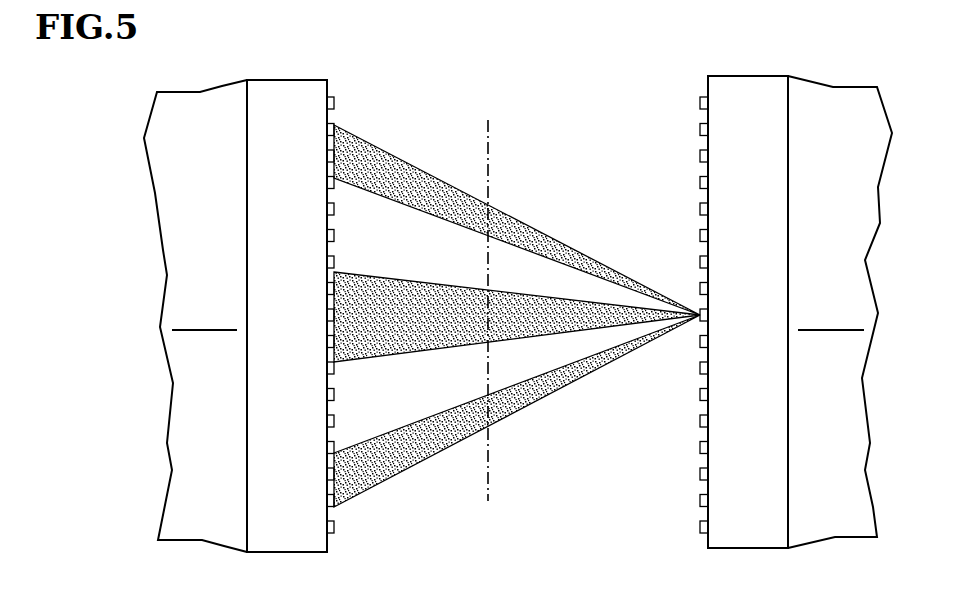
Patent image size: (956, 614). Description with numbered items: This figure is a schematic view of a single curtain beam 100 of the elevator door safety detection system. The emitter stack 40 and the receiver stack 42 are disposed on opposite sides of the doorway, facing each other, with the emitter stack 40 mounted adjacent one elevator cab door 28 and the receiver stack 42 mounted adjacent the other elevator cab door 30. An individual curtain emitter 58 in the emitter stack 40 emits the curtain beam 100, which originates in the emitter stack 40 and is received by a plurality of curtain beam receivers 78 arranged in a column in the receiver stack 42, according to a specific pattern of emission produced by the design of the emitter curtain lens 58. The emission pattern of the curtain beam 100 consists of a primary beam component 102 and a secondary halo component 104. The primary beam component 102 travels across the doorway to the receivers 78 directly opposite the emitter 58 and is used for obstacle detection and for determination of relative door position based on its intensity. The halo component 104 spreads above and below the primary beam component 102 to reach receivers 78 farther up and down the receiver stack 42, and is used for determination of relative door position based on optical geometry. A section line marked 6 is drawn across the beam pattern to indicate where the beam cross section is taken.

The elevator cab door 28 is at (860, 286).
The elevator cab door 30 is at (170, 292).
The emitter stack 40 is at (707, 546).
The receiver stack 42 is at (329, 552).
The curtain emitter lens 58 is at (706, 308).
The curtain receiver lens 78 is at (334, 98).
The curtain beam 100 is at (576, 106).
The primary beam component 102 is at (392, 278).
The secondary halo component 104 is at (527, 224).
The section line for FIG. 6 is at (526, 122).